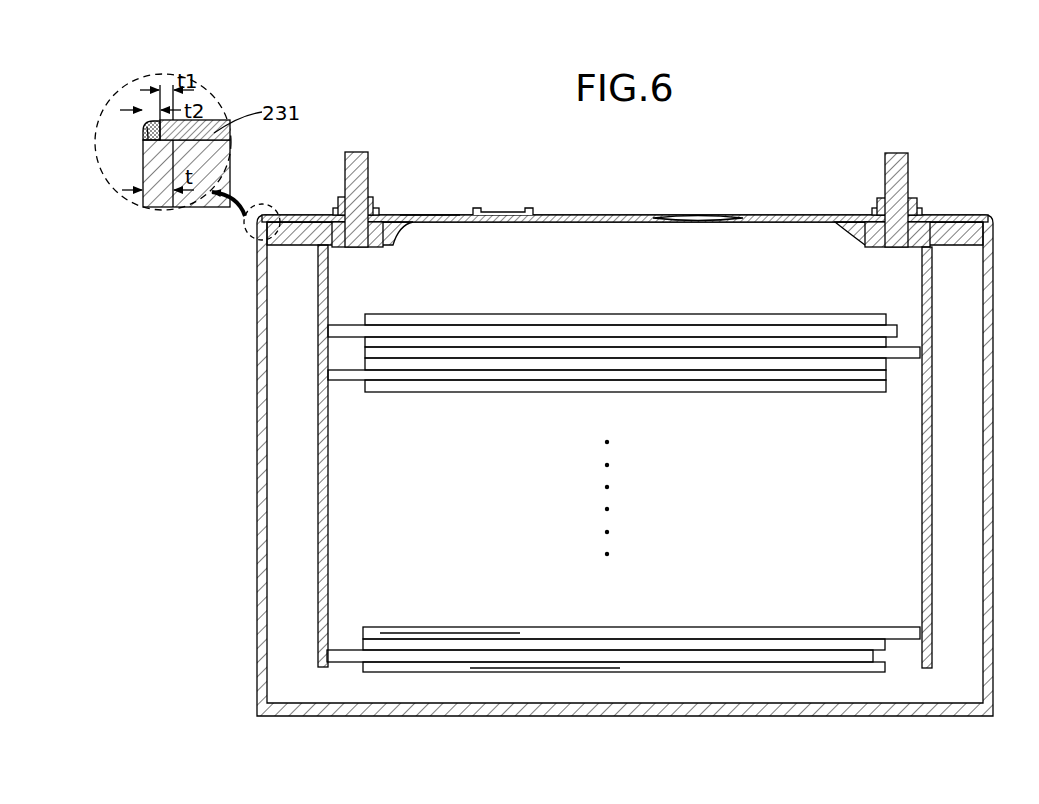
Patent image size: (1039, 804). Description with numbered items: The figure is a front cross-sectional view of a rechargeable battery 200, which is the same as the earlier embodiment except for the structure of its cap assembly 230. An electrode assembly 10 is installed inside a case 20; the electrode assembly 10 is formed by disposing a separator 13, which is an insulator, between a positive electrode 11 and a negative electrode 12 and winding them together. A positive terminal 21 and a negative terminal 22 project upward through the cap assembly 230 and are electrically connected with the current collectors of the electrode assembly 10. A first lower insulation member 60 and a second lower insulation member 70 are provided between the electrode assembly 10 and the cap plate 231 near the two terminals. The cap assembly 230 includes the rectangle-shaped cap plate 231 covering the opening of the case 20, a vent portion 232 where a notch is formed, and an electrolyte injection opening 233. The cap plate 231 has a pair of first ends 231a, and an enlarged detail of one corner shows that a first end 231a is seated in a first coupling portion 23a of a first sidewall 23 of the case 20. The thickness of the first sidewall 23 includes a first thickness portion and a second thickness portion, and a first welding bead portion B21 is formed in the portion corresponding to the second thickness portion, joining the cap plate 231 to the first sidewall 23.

The electrode assembly 10 is at (758, 568).
The positive electrode 11 is at (349, 657).
The negative electrode 12 is at (472, 634).
The separator 13 is at (570, 668).
The case 20 is at (253, 618).
The positive terminal 21 is at (346, 180).
The negative terminal 22 is at (893, 181).
The first sidewall 23 is at (150, 165).
The first coupling portion 23a is at (150, 122).
The first lower insulation member 60 is at (262, 240).
The second lower insulation member 70 is at (968, 236).
The rechargeable battery 200 is at (779, 137).
The cap assembly 230 is at (558, 212).
The cap plate 231 is at (428, 214).
The first ends 231a is at (200, 121).
The vent portion 232 is at (706, 214).
The electrolyte injection opening 233 is at (505, 207).
The first welding bead portion B21 is at (145, 128).